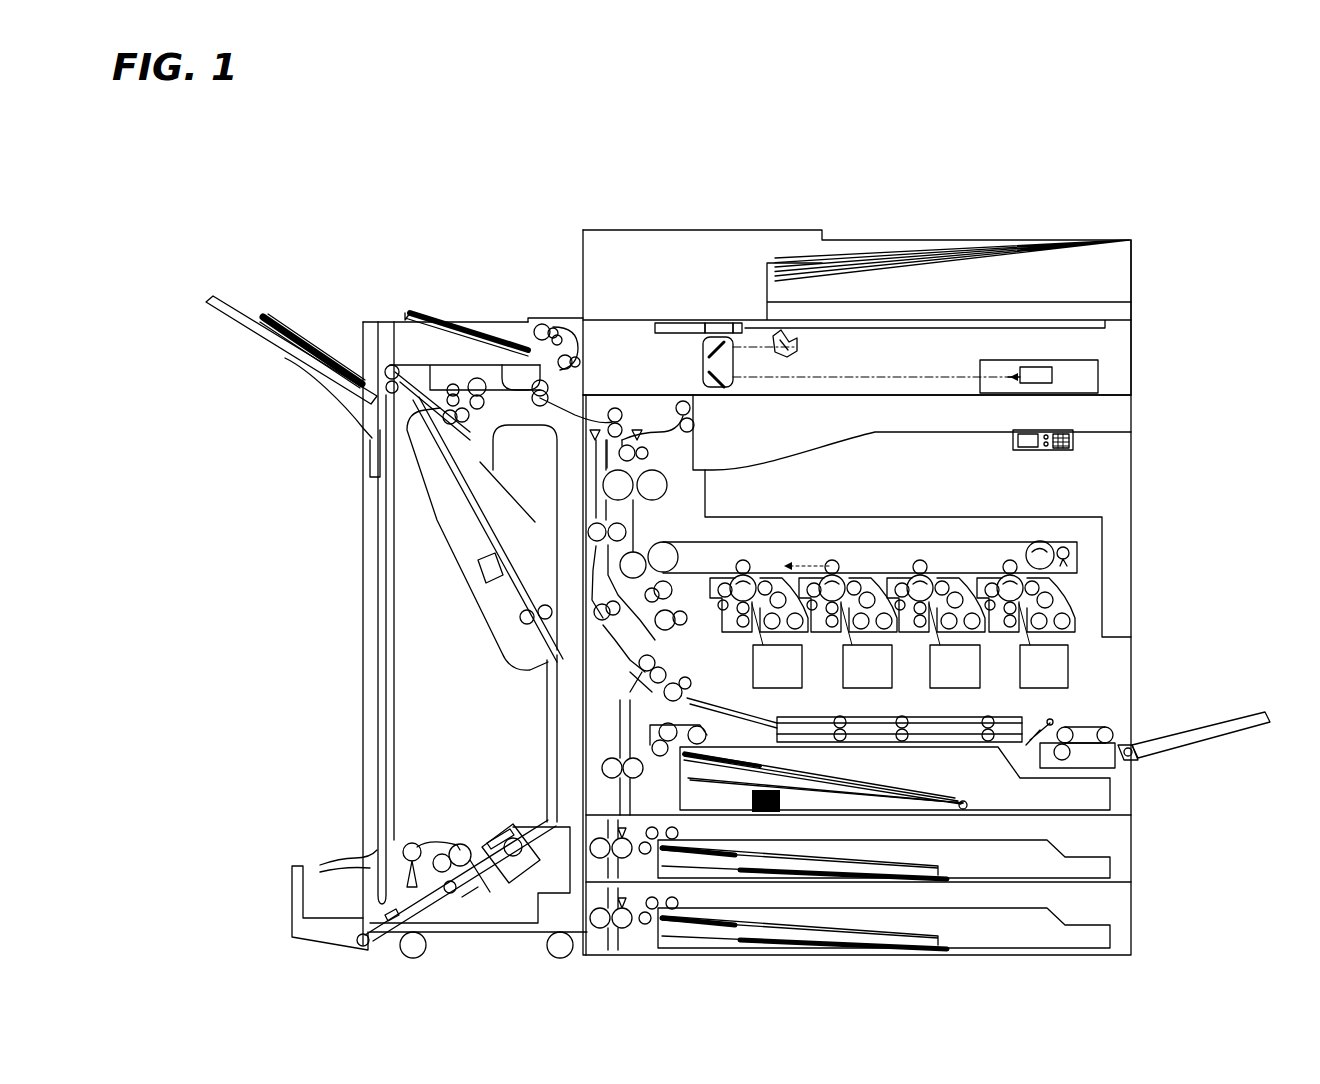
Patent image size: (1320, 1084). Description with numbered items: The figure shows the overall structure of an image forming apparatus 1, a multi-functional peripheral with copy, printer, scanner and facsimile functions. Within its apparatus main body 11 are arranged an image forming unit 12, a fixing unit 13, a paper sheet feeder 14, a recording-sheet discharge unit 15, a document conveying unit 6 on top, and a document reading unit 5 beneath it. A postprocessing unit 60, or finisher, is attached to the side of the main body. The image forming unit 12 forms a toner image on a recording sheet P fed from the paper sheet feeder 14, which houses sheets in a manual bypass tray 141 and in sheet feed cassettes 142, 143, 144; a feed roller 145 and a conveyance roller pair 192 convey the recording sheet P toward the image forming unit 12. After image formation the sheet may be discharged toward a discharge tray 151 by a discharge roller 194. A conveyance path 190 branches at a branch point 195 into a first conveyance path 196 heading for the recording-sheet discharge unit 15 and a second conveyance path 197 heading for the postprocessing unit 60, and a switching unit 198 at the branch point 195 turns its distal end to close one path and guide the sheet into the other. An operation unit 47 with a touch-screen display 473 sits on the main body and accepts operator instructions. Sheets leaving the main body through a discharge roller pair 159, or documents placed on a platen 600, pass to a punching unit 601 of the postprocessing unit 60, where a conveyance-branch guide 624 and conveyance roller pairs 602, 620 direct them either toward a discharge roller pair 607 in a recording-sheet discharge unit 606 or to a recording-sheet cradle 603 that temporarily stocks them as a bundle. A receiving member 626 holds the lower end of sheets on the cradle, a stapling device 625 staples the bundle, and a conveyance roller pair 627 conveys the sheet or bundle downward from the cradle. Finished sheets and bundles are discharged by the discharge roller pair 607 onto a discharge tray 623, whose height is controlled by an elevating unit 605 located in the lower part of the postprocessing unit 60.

The image forming apparatus 1 is at (918, 156).
The document reading unit 5 is at (598, 226).
The document conveying unit 6 is at (976, 226).
The apparatus main body 11 is at (1135, 342).
The image forming unit 12 is at (1098, 547).
The fixing unit 13 is at (628, 408).
The paper sheet feeder 14 is at (947, 825).
The recording-sheet discharge unit 15 is at (1083, 440).
The operation unit 47 is at (1085, 446).
The postprocessing unit 60 is at (333, 549).
The manual bypass tray 141 is at (1222, 752).
The sheet feed cassette 142 is at (1112, 795).
The sheet feed cassette 143 is at (1112, 862).
The sheet feed cassette 144 is at (923, 919).
The feed roller 145 is at (660, 713).
The discharge tray 151 is at (785, 463).
The discharge roller pair 159 is at (596, 428).
The conveyance path 190 is at (640, 622).
The conveyance roller pair 192 is at (680, 661).
The discharge roller 194 is at (667, 405).
The branch point 195 is at (608, 408).
The first conveyance path 196 is at (644, 425).
The second conveyance path 197 is at (597, 428).
The switching unit 198 is at (650, 440).
The display 473 is at (1013, 440).
The platen 600 is at (410, 313).
The punching unit 601 is at (477, 382).
The conveyance roller pair 602 is at (512, 365).
The recording-sheet cradle 603 is at (492, 533).
The elevating unit 605 is at (380, 832).
The recording-sheet discharge unit 606 is at (393, 365).
The discharge roller pair 607 is at (377, 395).
The conveyance roller pair 620 is at (455, 345).
The discharge tray 623 is at (213, 316).
The conveyance-branch guide 624 is at (390, 411).
The stapling device 625 is at (483, 580).
The receiving member 626 is at (468, 507).
The conveyance roller pair 627 is at (530, 617).
The recording sheet P is at (920, 757).